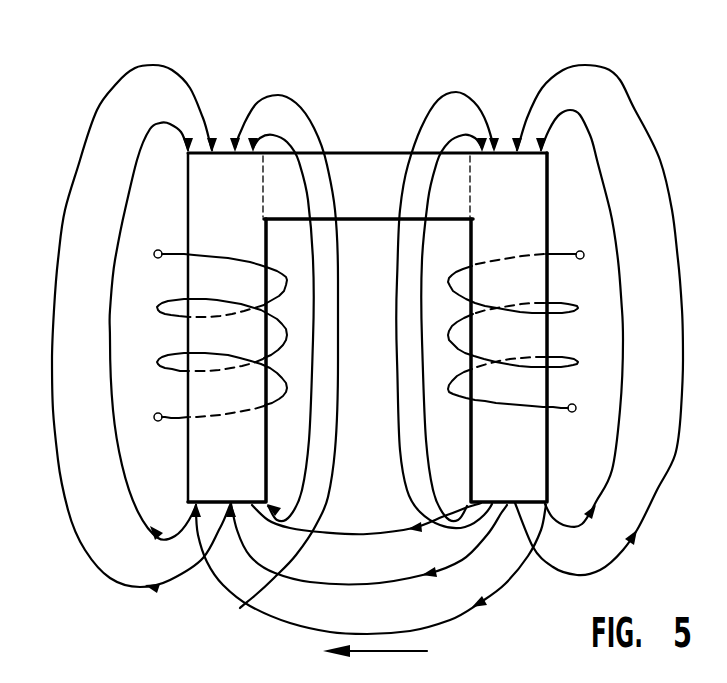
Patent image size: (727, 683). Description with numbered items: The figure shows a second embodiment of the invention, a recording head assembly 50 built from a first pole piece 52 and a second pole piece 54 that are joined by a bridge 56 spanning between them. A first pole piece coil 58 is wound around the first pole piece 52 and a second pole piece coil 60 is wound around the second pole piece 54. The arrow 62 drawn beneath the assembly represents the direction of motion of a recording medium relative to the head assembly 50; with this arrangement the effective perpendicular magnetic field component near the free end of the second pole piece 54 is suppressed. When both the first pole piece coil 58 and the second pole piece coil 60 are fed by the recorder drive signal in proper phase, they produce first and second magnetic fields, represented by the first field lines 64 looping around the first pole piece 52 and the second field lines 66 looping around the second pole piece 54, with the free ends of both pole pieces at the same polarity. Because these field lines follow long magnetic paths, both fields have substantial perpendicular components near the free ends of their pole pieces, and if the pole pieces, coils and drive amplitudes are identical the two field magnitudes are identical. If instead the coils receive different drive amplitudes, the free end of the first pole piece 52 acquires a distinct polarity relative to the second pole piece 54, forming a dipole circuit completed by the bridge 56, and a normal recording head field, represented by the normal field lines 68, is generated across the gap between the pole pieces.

The recording head assembly 50 is at (412, 95).
The first pole piece 52 is at (549, 430).
The second pole piece 54 is at (188, 483).
The bridge 56 is at (372, 152).
The first pole piece coil 58 is at (562, 253).
The second pole piece coil 60 is at (186, 419).
The arrow 62 is at (412, 650).
The first field lines 64 is at (541, 138).
The second field lines 66 is at (258, 138).
The normal field lines 68 is at (264, 612).